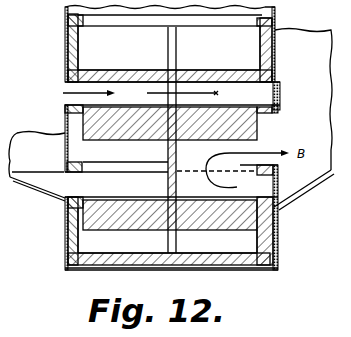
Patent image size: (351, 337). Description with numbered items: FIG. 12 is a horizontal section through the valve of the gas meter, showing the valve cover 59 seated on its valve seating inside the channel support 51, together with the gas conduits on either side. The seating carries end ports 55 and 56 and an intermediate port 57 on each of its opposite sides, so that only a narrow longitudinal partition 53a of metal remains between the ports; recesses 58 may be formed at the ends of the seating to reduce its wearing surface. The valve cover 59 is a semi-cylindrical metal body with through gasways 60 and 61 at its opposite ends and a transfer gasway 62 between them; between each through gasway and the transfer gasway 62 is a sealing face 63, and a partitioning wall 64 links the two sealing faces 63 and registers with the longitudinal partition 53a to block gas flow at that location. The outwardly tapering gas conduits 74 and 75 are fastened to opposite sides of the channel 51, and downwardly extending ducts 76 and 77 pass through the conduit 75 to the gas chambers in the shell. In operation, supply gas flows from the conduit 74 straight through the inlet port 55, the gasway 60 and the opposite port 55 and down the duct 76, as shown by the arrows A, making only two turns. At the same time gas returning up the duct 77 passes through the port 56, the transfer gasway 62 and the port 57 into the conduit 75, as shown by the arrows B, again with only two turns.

The channel support 51 is at (65, 12).
The longitudinal partition 53a is at (214, 248).
The end port 55 is at (63, 82).
The end port 56 is at (70, 182).
The intermediate port 57 is at (73, 133).
The recess 58 is at (258, 233).
The valve cover 59 is at (126, 266).
The through gasway 60 is at (151, 88).
The through gasway 61 is at (137, 237).
The transfer gasway 62 is at (186, 149).
The sealing face 63 is at (257, 120).
The partitioning wall 64 is at (168, 185).
The gas conduit 74 is at (37, 167).
The gas conduit 75 is at (304, 120).
The duct 76 is at (281, 91).
The duct 77 is at (281, 181).